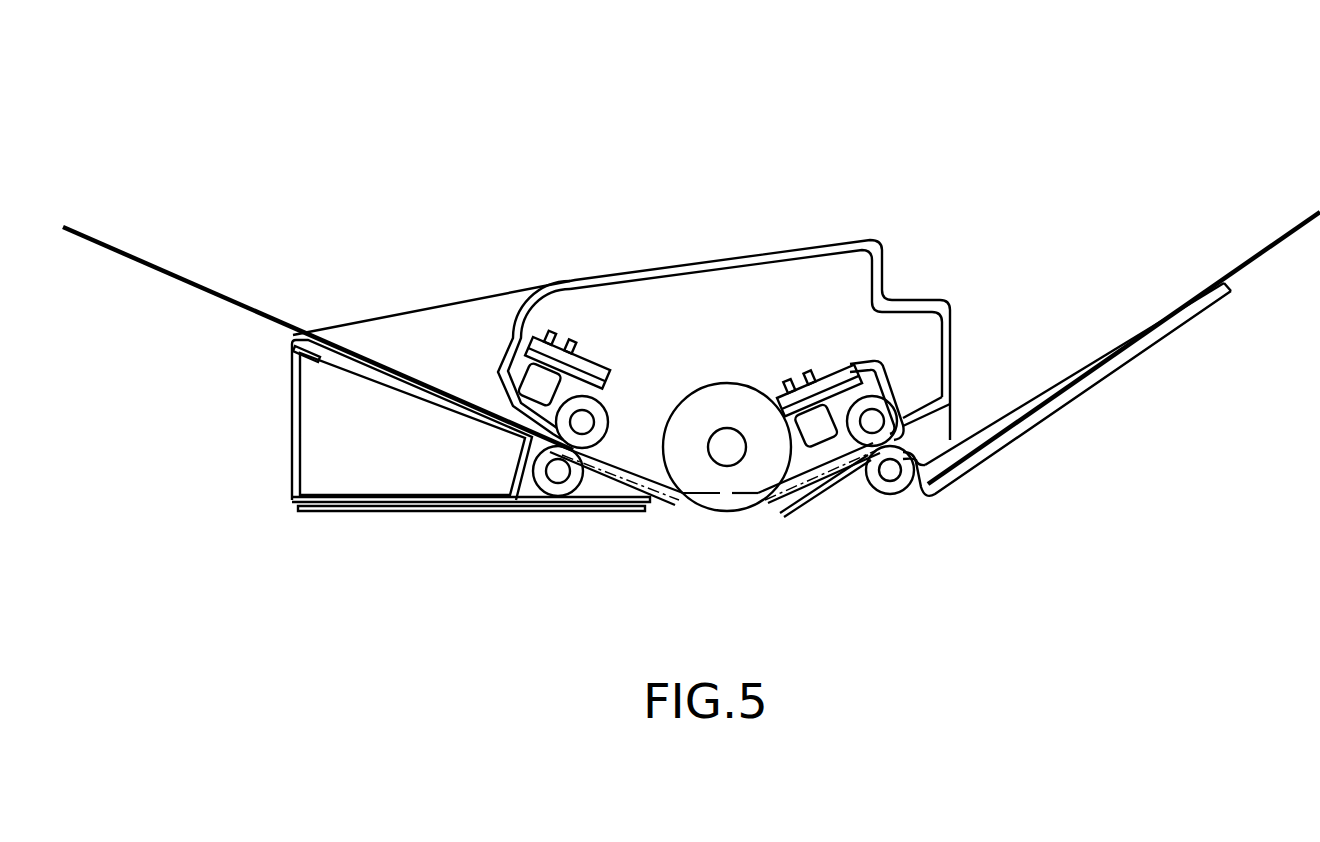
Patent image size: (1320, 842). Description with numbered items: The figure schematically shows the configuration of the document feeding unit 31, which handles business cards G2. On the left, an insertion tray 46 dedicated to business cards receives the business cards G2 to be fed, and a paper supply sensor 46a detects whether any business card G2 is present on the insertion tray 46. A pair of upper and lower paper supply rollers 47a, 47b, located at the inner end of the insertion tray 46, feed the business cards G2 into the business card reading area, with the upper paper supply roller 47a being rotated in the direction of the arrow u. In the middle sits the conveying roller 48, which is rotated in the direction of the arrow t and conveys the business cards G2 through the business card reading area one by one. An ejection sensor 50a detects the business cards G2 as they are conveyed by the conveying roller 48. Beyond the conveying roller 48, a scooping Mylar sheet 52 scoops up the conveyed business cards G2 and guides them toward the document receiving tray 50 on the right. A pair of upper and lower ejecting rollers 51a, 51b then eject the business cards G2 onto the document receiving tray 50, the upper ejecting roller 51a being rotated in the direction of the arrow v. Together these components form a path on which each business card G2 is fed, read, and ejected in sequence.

The document feeding unit 31 is at (748, 123).
The insertion tray dedicated to business cards 46 is at (347, 361).
The paper supply sensor 46a is at (574, 342).
The upper paper supply roller 47a is at (604, 396).
The lower paper supply roller 47b is at (534, 488).
The conveying roller 48 is at (730, 380).
The document receiving tray 50 is at (1103, 380).
The ejection sensor 50a is at (835, 367).
The upper ejecting roller 51a is at (883, 392).
The lower ejecting roller 51b is at (898, 500).
The scooping Mylar sheet 52 is at (798, 513).
The business card G2 is at (116, 246).
The rotation direction of the conveying roller t is at (657, 423).
The rotation direction of the upper paper supply roller u is at (612, 404).
The rotation direction of the upper ejecting roller v is at (841, 405).